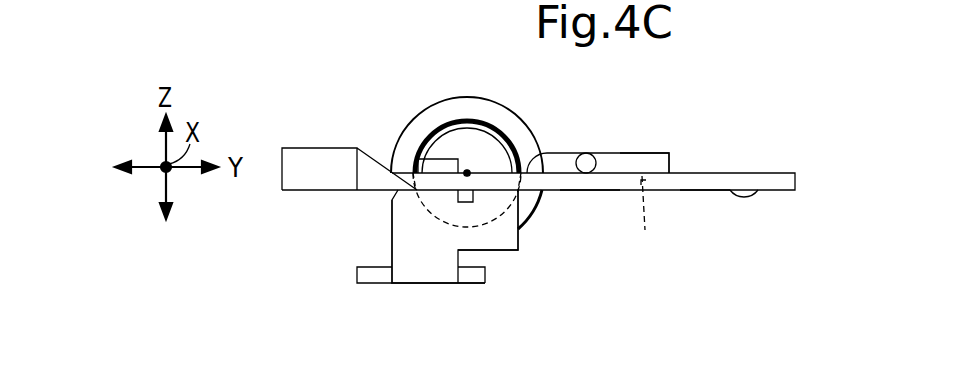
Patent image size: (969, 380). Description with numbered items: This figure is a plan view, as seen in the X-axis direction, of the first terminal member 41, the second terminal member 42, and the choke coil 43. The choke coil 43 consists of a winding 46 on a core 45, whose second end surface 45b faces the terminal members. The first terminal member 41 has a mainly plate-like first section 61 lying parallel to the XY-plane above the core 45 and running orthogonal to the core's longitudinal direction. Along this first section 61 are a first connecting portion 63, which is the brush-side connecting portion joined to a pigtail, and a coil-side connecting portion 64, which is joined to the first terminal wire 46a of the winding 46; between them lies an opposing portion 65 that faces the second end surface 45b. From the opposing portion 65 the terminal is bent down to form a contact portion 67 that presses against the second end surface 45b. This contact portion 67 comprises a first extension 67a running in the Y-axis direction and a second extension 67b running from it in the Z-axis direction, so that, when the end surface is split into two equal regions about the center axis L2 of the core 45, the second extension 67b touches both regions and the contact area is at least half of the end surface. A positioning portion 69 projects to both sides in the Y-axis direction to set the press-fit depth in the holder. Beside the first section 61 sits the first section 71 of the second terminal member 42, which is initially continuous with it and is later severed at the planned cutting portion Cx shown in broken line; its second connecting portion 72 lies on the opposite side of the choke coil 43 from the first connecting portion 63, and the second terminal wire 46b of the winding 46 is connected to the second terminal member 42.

The first terminal member 41 is at (548, 193).
The second terminal member 42 is at (737, 172).
The choke coil 43 is at (396, 138).
The core 45 is at (415, 203).
The second end surface 45b is at (488, 142).
The winding 46 is at (527, 133).
The first terminal wire 46a is at (587, 153).
The second terminal wire 46b is at (647, 154).
The first section 61 is at (436, 279).
The first connecting portion 63 is at (300, 153).
The coil-side connecting portion 64 is at (587, 177).
The opposing portion 65 is at (450, 184).
The contact portion 67 is at (494, 201).
The first extension 67a is at (470, 214).
The second extension 67b is at (439, 157).
The positioning portion 69 is at (357, 272).
The first section 71 is at (705, 183).
The second connecting portion 72 is at (770, 191).
The center axis L2 is at (467, 171).
The planned cutting portion Cx is at (645, 217).